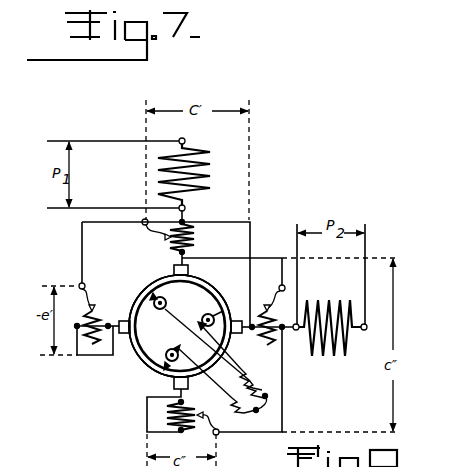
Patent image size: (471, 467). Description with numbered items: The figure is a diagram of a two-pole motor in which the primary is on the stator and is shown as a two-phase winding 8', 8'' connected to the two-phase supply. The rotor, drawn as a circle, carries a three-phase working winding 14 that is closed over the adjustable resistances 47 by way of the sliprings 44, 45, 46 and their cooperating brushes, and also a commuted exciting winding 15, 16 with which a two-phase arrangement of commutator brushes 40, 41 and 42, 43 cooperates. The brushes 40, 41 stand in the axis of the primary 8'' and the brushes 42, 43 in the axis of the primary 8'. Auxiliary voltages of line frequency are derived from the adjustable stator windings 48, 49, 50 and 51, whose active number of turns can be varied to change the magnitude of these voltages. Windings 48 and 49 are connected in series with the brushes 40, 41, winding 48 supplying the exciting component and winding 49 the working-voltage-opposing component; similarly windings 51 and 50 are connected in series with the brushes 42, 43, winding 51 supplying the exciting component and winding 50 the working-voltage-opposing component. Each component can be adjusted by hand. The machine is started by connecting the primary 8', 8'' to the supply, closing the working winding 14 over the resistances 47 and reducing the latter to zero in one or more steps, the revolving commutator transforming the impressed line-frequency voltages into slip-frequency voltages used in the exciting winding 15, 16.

The two-phase primary winding 8' is at (192, 174).
The two-phase primary winding 8'' is at (330, 336).
The three-phase working winding 14 is at (207, 291).
The commuted exciting winding 15 is at (143, 368).
The commuted exciting winding 16 is at (180, 326).
The brush 40 is at (241, 338).
The brush 41 is at (119, 316).
The brush 42 is at (178, 404).
The brush 43 is at (167, 265).
The slipring 44 is at (218, 334).
The slipring 45 is at (199, 334).
The slipring 46 is at (189, 368).
The adjustable resistances 47 is at (268, 395).
The auxiliary stator winding 48 is at (180, 237).
The auxiliary stator winding 49 is at (86, 322).
The auxiliary stator winding 50 is at (193, 424).
The auxiliary stator winding 51 is at (272, 301).